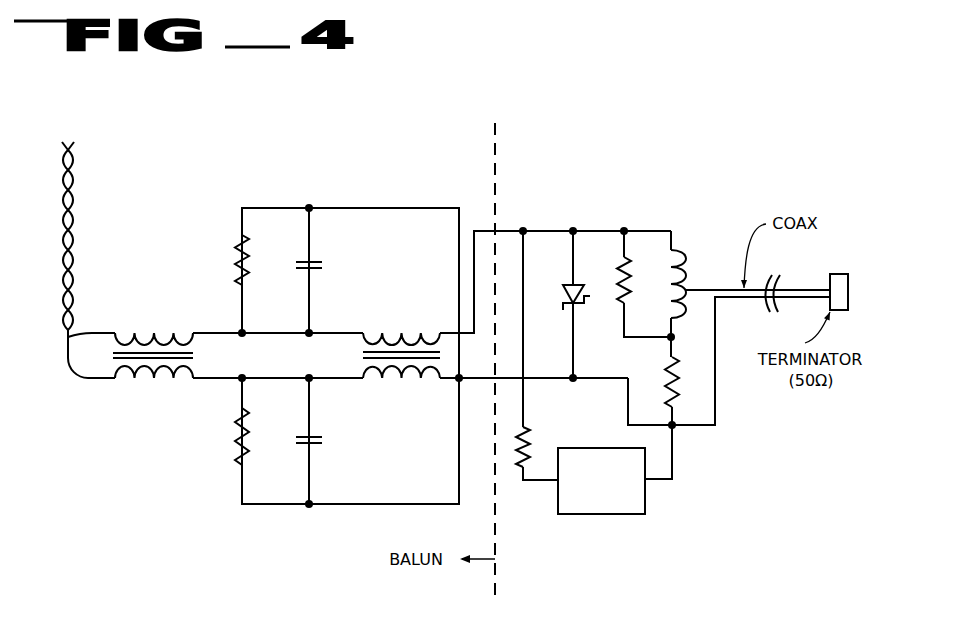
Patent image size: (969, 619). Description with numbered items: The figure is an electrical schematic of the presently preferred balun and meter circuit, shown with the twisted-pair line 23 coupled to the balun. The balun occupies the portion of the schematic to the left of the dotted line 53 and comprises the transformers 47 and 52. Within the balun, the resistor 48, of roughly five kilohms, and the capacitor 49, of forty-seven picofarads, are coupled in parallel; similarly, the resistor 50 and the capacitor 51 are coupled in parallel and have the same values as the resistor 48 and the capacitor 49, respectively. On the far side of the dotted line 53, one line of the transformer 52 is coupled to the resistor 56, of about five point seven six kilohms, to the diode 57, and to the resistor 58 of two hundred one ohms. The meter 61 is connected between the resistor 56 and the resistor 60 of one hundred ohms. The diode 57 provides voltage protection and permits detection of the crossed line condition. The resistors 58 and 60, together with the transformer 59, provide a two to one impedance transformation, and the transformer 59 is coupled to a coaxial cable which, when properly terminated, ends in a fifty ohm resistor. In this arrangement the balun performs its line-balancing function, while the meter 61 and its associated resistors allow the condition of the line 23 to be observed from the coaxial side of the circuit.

The line 23 is at (77, 202).
The transformer 47 is at (152, 322).
The resistor 48 is at (237, 277).
The capacitor 49 is at (328, 265).
The resistor 50 is at (238, 437).
The capacitor 51 is at (330, 443).
The transformer 52 is at (403, 322).
The dotted line 53 is at (497, 160).
The resistor 56 is at (534, 432).
The diode 57 is at (560, 290).
The resistor 58 is at (615, 275).
The transformer 59 is at (690, 268).
The resistor 60 is at (667, 372).
The meter 61 is at (612, 515).